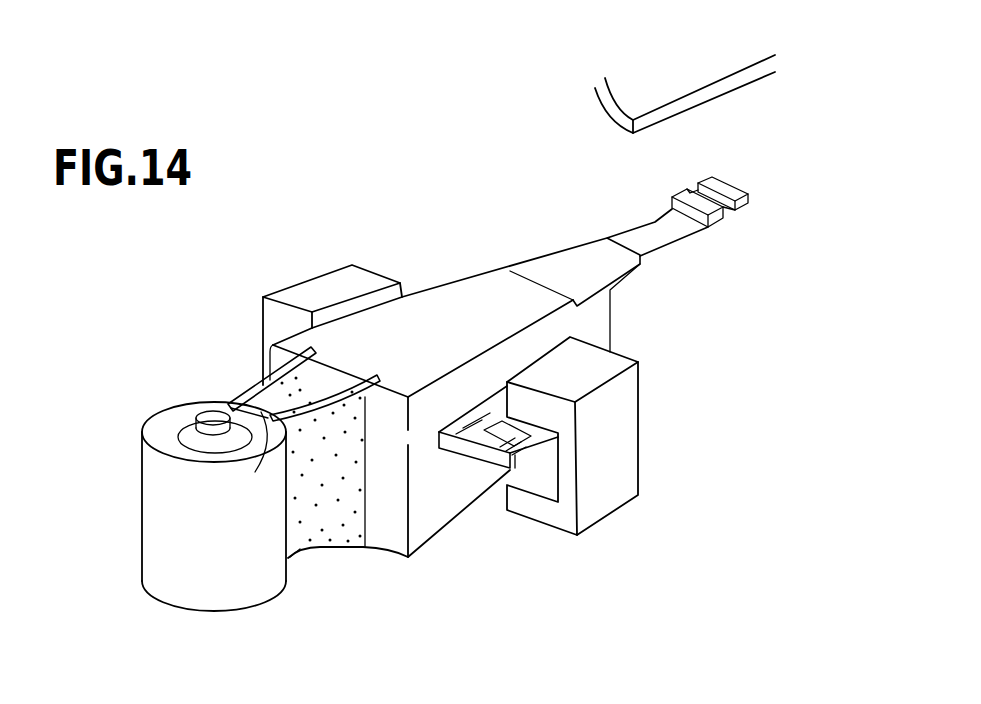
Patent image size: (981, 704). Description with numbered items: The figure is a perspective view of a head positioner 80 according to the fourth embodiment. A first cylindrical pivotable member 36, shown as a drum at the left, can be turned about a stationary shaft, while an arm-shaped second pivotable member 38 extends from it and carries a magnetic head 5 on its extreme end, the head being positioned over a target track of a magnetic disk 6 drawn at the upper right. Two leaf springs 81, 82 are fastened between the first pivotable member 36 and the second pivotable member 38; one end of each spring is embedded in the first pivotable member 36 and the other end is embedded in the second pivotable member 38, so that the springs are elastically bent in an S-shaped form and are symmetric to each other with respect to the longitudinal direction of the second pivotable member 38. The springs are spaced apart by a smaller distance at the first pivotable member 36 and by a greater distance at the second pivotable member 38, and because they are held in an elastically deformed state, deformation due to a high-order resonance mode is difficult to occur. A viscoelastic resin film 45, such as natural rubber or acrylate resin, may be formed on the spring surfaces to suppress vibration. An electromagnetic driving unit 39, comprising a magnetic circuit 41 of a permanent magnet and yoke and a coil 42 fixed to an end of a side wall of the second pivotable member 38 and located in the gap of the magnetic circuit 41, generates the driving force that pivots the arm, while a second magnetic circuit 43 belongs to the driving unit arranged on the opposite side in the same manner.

The head positioner 80 is at (404, 143).
The second pivotable member 38 is at (458, 283).
The magnetic circuit 43 is at (302, 281).
The leaf spring 81 is at (258, 378).
The first pivotable member 36 is at (150, 512).
The viscoelastic resin film 45 is at (308, 542).
The leaf spring 82 is at (343, 543).
The electromagnetic driving unit 39 is at (705, 377).
The magnetic circuit 41 is at (640, 390).
The coil 42 is at (547, 447).
The magnetic head 5 is at (733, 217).
The magnetic disk 6 is at (680, 82).